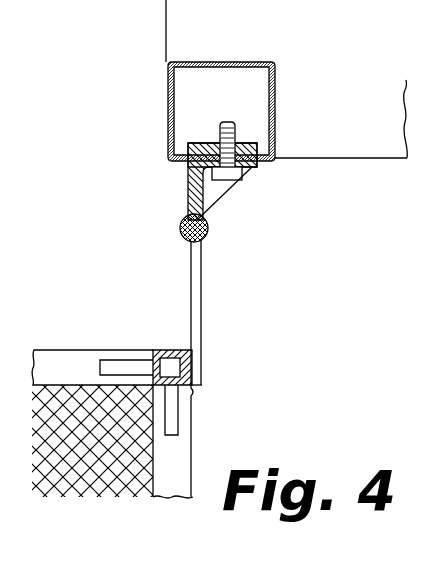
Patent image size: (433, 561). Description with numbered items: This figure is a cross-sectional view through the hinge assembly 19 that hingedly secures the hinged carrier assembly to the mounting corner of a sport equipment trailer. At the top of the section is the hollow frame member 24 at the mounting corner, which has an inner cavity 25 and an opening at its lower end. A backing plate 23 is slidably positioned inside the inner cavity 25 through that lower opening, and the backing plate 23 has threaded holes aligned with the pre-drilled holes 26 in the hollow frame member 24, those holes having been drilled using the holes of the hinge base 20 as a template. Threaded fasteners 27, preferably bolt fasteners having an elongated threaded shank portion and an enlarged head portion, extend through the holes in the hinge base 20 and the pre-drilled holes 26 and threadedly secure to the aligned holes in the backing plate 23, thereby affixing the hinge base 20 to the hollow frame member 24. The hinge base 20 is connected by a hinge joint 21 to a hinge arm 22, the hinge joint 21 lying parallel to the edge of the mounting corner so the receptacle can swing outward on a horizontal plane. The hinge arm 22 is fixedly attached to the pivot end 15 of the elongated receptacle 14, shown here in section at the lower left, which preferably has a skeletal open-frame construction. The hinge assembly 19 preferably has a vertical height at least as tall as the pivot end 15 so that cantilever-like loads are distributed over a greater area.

The elongated receptacle 14 is at (100, 509).
The pivot end 15 is at (69, 360).
The hinge assembly 19 is at (267, 227).
The hinge base 20 is at (197, 193).
The hinge joint 21 is at (208, 232).
The hinge arm 22 is at (195, 300).
The backing plate 23 is at (237, 140).
The hollow frame member 24 is at (222, 62).
The inner cavity 25 is at (252, 88).
The pre-drilled holes 26 is at (252, 167).
The threaded fasteners 27 is at (218, 135).